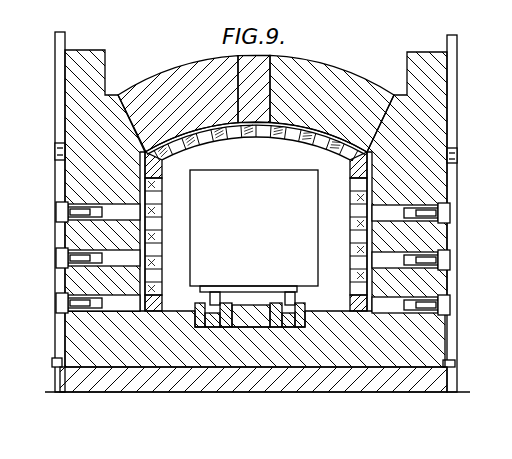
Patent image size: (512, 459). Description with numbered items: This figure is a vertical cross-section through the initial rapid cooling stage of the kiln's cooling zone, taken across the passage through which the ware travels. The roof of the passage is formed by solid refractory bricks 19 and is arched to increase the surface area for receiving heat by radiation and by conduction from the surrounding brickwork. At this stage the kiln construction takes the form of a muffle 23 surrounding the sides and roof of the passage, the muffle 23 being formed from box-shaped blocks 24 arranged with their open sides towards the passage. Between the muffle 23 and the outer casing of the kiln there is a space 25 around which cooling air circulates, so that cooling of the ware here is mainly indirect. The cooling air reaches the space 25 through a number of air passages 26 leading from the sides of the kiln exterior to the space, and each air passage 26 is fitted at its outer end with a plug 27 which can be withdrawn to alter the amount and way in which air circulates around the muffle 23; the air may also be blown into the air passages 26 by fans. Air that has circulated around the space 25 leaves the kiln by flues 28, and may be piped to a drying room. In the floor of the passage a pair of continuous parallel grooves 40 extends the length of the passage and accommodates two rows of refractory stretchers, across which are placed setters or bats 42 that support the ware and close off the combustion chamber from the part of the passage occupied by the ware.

The solid refractory bricks 19 is at (337, 88).
The muffle 23 is at (187, 140).
The box-shaped blocks 24 is at (163, 240).
The space 25 is at (150, 183).
The air passages 26 is at (98, 212).
The plug 27 is at (56, 213).
The flues 28 is at (253, 80).
The grooves 40 is at (218, 307).
The setters or bats 42 is at (210, 288).